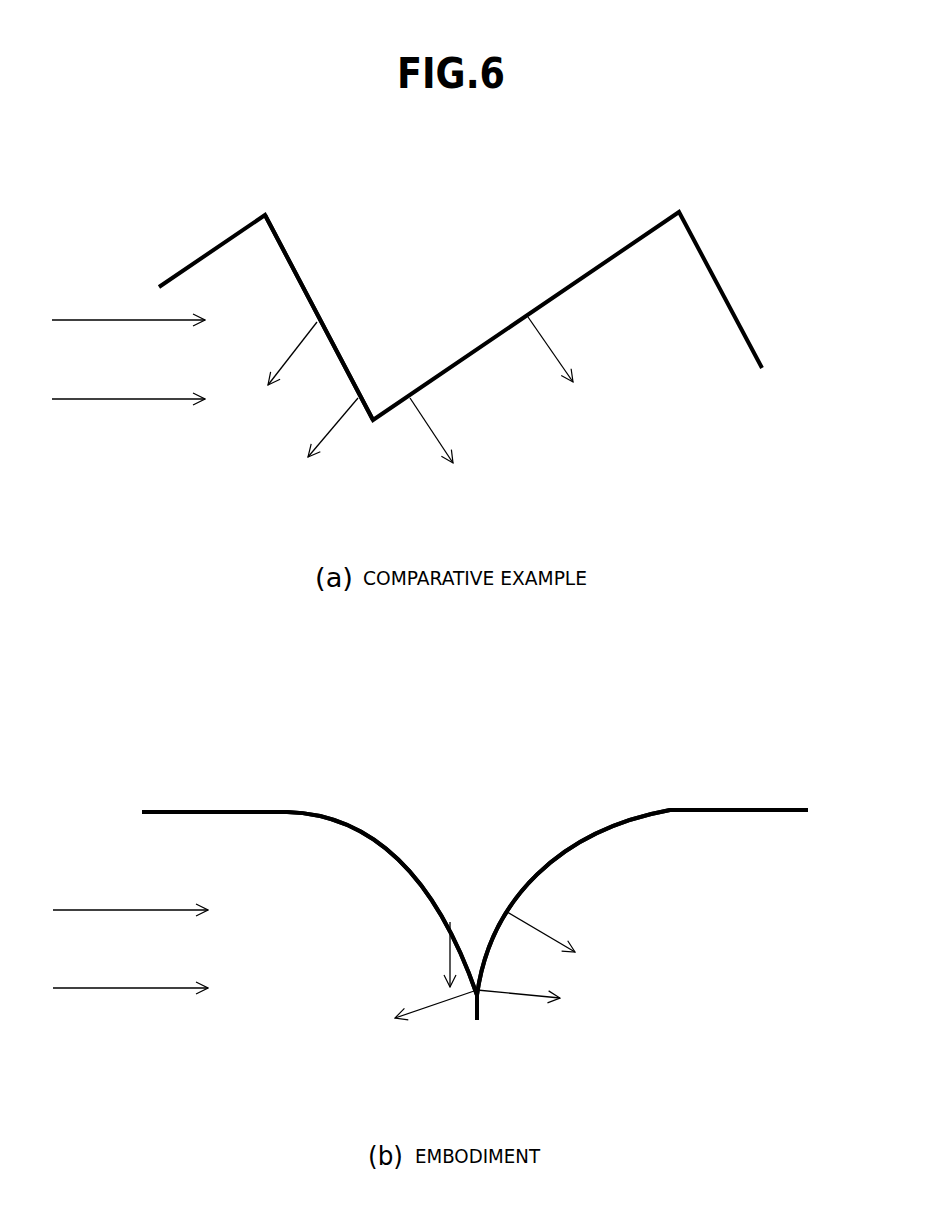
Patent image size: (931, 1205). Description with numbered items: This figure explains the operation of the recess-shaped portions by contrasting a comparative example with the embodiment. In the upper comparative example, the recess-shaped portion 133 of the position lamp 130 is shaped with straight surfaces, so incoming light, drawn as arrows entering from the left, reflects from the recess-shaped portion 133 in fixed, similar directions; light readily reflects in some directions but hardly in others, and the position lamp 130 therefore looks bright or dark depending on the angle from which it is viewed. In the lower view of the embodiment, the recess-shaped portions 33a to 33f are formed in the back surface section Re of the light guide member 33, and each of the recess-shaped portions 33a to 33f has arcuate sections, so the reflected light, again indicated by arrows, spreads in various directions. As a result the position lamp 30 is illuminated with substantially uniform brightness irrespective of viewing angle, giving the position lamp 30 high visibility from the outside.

The position lamp 130 is at (145, 215).
The recess-shaped portion 133 is at (300, 277).
The position lamp 30 is at (157, 753).
The light guide member 33 is at (755, 808).
The recess-shaped portion 33a is at (400, 855).
The recess-shaped portion 33f is at (573, 902).
The back surface section Re is at (237, 812).